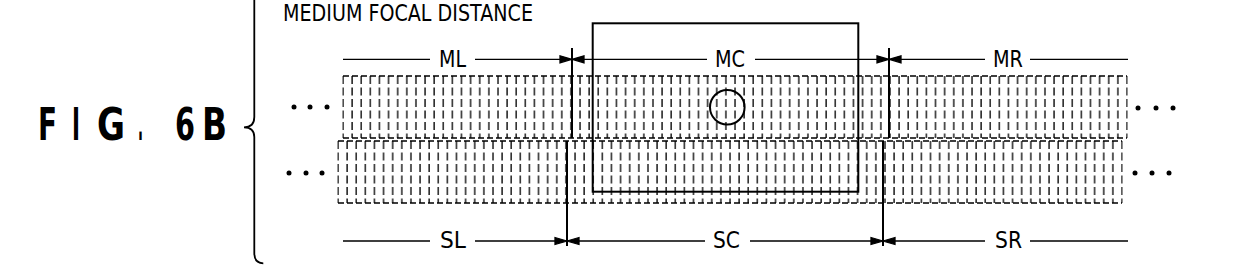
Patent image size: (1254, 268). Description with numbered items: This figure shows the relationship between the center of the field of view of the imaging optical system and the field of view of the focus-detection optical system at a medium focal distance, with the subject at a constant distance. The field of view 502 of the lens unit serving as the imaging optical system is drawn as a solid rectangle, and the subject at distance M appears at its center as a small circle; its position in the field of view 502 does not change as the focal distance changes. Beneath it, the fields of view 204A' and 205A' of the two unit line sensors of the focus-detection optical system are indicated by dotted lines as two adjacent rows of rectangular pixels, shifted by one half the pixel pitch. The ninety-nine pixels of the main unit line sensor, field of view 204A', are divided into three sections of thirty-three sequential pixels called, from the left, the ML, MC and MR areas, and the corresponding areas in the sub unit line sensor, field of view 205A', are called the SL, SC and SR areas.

The field of view 502 is at (859, 36).
The field of view of unit line sensor 204A' is at (783, 98).
The field of view of unit line sensor 205A' is at (778, 177).